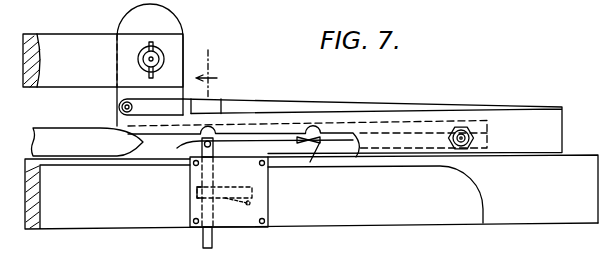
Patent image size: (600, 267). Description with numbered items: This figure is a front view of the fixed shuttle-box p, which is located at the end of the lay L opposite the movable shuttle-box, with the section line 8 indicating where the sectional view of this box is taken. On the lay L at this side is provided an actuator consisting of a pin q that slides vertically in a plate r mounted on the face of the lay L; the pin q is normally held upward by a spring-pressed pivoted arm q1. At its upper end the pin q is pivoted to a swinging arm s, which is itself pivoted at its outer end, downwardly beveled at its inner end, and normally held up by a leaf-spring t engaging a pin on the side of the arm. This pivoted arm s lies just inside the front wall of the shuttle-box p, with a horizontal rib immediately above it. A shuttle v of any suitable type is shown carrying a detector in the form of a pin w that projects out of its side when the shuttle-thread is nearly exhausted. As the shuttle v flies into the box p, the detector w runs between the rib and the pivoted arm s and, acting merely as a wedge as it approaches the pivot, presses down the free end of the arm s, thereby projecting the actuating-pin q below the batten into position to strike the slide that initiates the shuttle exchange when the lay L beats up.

The section line 8 8 is at (206, 57).
The fixed shuttle-box p is at (340, 126).
The leaf-spring t is at (297, 137).
The swinging arm s is at (333, 143).
The shuttle v is at (75, 128).
The detector pin w is at (63, 146).
The lay L is at (433, 189).
The spring-pressed pivoted arm q1 is at (233, 184).
The plate r is at (246, 205).
The actuating-pin q is at (201, 240).